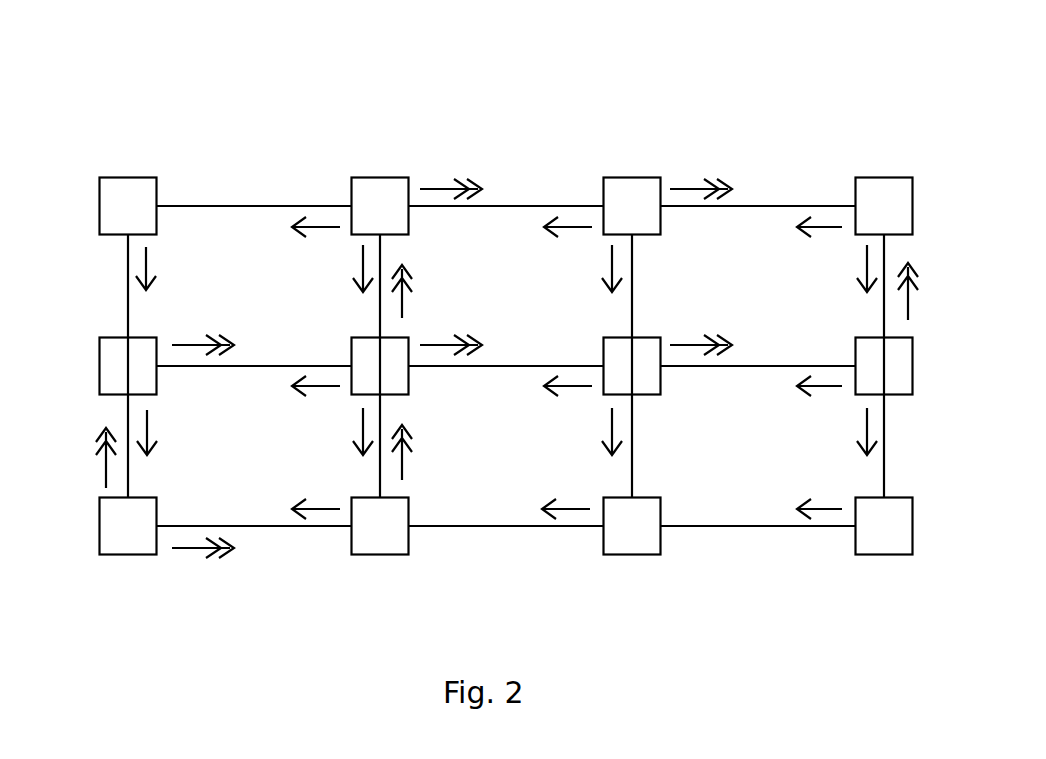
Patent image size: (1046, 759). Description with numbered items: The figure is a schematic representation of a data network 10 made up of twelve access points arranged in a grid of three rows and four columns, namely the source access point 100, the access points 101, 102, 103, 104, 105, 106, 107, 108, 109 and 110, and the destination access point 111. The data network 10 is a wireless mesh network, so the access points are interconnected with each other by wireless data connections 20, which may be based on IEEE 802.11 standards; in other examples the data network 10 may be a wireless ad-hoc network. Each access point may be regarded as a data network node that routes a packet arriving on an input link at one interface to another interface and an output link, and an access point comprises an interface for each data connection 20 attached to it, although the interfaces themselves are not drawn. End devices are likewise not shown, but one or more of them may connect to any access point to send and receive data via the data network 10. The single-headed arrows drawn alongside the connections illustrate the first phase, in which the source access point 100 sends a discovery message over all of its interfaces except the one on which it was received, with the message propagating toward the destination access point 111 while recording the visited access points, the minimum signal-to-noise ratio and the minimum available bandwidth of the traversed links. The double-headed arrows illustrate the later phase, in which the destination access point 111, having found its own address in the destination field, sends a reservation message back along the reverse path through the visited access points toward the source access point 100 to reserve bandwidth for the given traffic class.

The data network 10 is at (103, 137).
The wireless data connection 20 is at (752, 205).
The source access point 100 is at (872, 188).
The access point 101 is at (866, 388).
The access point 102 is at (882, 540).
The access point 103 is at (635, 188).
The access point 104 is at (646, 350).
The access point 105 is at (637, 541).
The access point 106 is at (383, 188).
The access point 107 is at (401, 350).
The access point 108 is at (389, 541).
The access point 109 is at (127, 188).
The access point 110 is at (145, 350).
The destination access point 111 is at (141, 541).